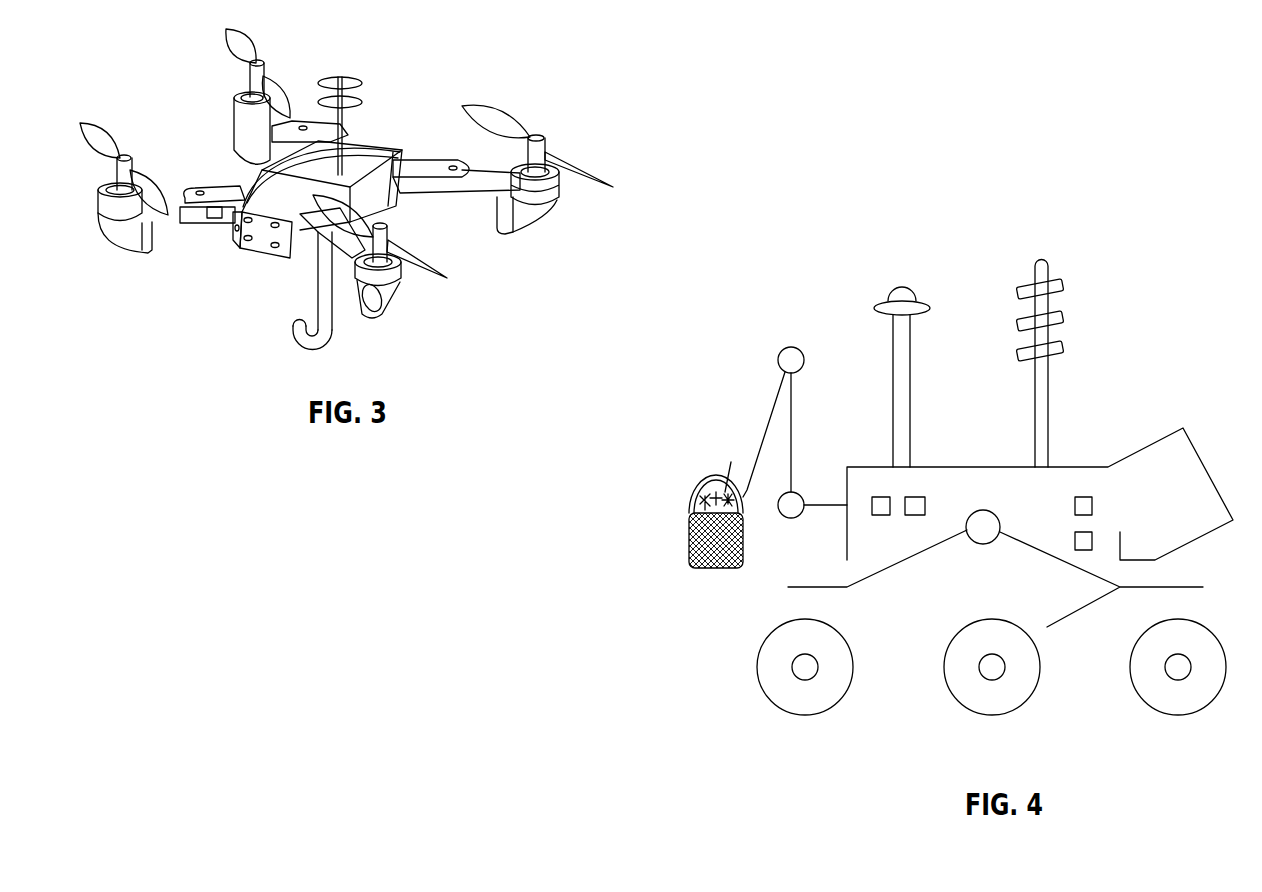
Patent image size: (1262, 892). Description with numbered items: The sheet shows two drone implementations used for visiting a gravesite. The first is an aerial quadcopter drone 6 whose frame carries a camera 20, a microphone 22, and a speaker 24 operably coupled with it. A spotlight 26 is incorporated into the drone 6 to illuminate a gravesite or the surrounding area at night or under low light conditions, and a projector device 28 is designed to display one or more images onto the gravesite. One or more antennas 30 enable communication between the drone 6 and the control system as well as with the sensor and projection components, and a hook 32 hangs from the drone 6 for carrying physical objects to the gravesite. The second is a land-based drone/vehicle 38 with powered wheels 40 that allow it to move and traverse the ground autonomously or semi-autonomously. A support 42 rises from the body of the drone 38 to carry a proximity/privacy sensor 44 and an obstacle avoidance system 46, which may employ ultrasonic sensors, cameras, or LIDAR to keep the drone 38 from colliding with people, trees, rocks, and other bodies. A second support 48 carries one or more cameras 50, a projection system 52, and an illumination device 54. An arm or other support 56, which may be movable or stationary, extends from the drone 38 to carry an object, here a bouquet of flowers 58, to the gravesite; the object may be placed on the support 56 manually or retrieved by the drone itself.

In FIG. 3, the drone 6 is at (573, 98).
In FIG. 3, the camera 20 is at (242, 246).
In FIG. 3, the microphone 22 is at (233, 229).
In FIG. 3, the speaker 24 is at (278, 248).
In FIG. 3, the spotlight 26 is at (293, 228).
In FIG. 3, the projector device 28 is at (245, 200).
In FIG. 3, the antennas 30 is at (364, 102).
In FIG. 3, the hook 32 is at (298, 334).
In FIG. 4, the land-based drone/vehicle 38 is at (1107, 192).
In FIG. 4, the wheels 40 is at (818, 715).
In FIG. 4, the support 42 is at (893, 400).
In FIG. 4, the proximity/privacy sensor 44 is at (926, 310).
In FIG. 4, the obstacle avoidance system 46 is at (887, 285).
In FIG. 4, the supports 48 is at (1050, 402).
In FIG. 4, the cameras 50 is at (1063, 284).
In FIG. 4, the projection system 52 is at (1063, 316).
In FIG. 4, the illumination device 54 is at (1063, 347).
In FIG. 4, the arm or other support 56 is at (766, 430).
In FIG. 4, the bouquet of flowers 58 is at (688, 510).